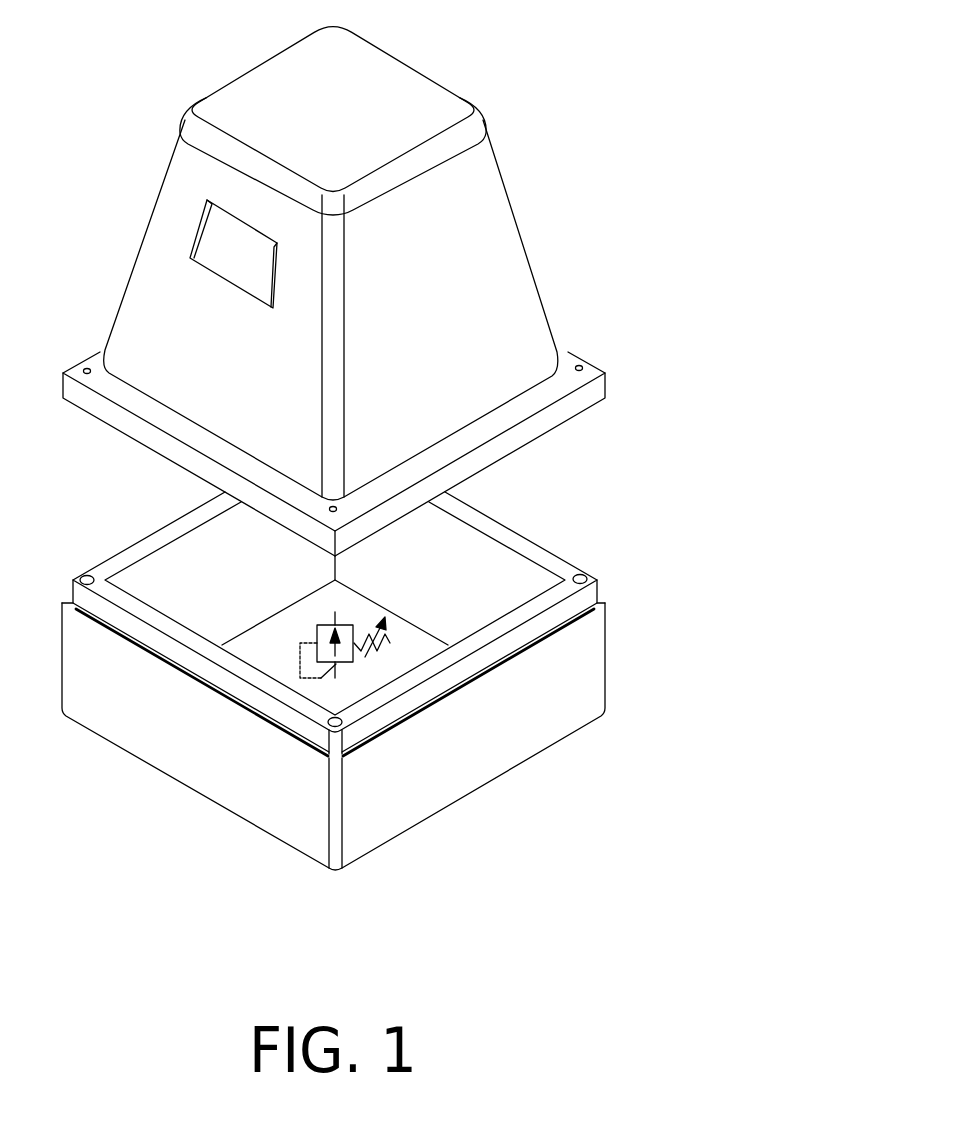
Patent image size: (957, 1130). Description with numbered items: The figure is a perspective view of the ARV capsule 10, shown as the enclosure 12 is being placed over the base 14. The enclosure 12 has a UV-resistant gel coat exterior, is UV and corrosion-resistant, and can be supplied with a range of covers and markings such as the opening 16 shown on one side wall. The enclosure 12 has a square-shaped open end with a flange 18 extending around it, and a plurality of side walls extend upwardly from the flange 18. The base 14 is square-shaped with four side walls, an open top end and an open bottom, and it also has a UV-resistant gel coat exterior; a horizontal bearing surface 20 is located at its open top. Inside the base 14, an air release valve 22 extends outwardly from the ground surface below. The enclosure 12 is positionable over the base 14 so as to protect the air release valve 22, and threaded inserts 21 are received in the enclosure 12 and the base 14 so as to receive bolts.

The ARV capsule 10 is at (600, 152).
The enclosure 12 is at (450, 88).
The base 14 is at (607, 640).
The window 16 is at (213, 235).
The flange 18 is at (580, 400).
The horizontal bearing surface 20 is at (540, 543).
The threaded inserts 21 is at (80, 578).
The air release valve 22 is at (298, 640).